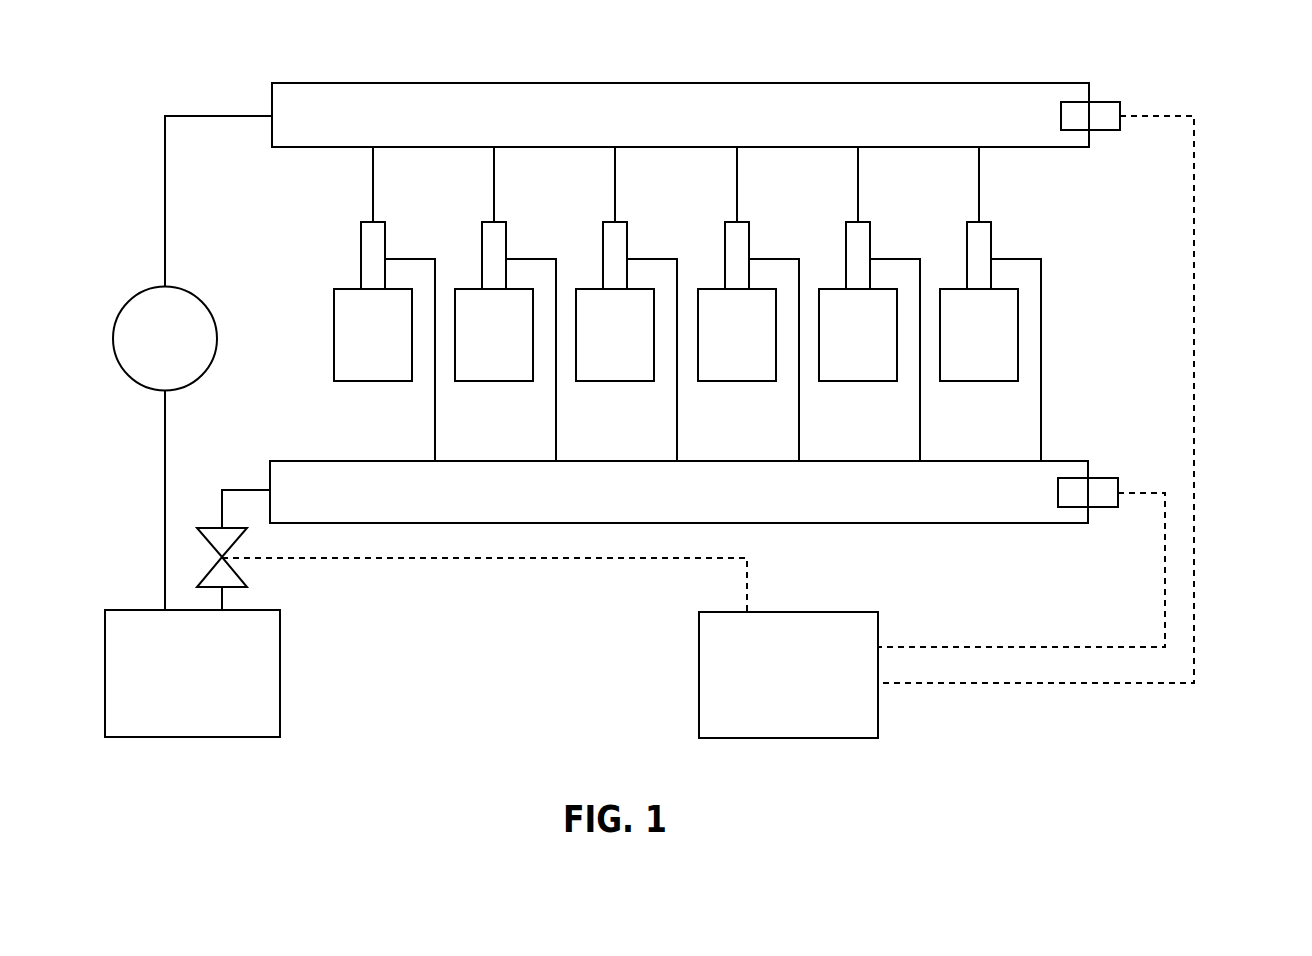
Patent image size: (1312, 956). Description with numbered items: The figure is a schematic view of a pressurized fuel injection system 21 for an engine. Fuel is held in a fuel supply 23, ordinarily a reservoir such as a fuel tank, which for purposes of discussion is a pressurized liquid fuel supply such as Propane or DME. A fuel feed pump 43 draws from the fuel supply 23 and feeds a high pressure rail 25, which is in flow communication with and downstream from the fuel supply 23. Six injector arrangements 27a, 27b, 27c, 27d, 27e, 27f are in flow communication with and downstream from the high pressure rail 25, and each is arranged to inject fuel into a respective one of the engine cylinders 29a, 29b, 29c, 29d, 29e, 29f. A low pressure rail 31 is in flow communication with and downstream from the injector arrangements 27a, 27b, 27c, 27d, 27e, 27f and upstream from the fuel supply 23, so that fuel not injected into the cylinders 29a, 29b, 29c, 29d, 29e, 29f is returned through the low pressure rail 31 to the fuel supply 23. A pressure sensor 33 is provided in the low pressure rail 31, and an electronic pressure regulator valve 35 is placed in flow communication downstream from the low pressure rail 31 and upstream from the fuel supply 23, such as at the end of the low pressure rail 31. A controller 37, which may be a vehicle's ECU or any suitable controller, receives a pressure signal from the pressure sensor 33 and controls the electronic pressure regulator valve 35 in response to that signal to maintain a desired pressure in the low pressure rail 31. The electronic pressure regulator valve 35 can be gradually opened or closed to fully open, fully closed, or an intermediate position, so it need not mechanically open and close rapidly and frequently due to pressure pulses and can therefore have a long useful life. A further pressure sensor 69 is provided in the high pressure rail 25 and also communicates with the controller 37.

The pressurized fuel injection system 21 is at (1253, 102).
The fuel supply 23 is at (282, 720).
The high pressure rail 25 is at (323, 83).
The injector arrangement 27a is at (361, 250).
The injector arrangement 27b is at (482, 250).
The injector arrangement 27c is at (603, 250).
The injector arrangement 27d is at (725, 250).
The injector arrangement 27e is at (846, 250).
The injector arrangement 27f is at (967, 250).
The cylinder 29a is at (376, 382).
The cylinder 29b is at (497, 382).
The cylinder 29c is at (618, 382).
The cylinder 29d is at (740, 382).
The cylinder 29e is at (861, 382).
The cylinder 29f is at (982, 382).
The low pressure rail 31 is at (921, 524).
The pressure sensor 33 is at (1107, 478).
The electronic pressure regulator valve 35 is at (207, 528).
The controller 37 is at (880, 733).
The fuel feed pump 43 is at (214, 352).
The pressure sensor 69 is at (1113, 102).